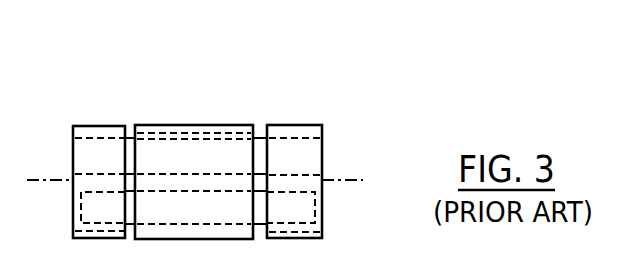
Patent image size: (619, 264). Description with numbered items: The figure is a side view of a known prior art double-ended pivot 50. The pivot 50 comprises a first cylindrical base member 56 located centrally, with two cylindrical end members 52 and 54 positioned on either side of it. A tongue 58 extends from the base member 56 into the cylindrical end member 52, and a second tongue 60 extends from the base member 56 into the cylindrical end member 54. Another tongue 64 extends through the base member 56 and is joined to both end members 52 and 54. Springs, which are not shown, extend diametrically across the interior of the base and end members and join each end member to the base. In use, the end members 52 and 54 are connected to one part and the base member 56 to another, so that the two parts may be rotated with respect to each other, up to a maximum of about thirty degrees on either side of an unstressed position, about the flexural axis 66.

The pivot 50 is at (237, 90).
The end member 52 is at (290, 125).
The end member 54 is at (97, 126).
The first cylindrical base member 56 is at (180, 125).
The tongue 58 is at (304, 204).
The second tongue 60 is at (88, 208).
The tongue 64 is at (151, 153).
The flexural axis 66 is at (355, 179).